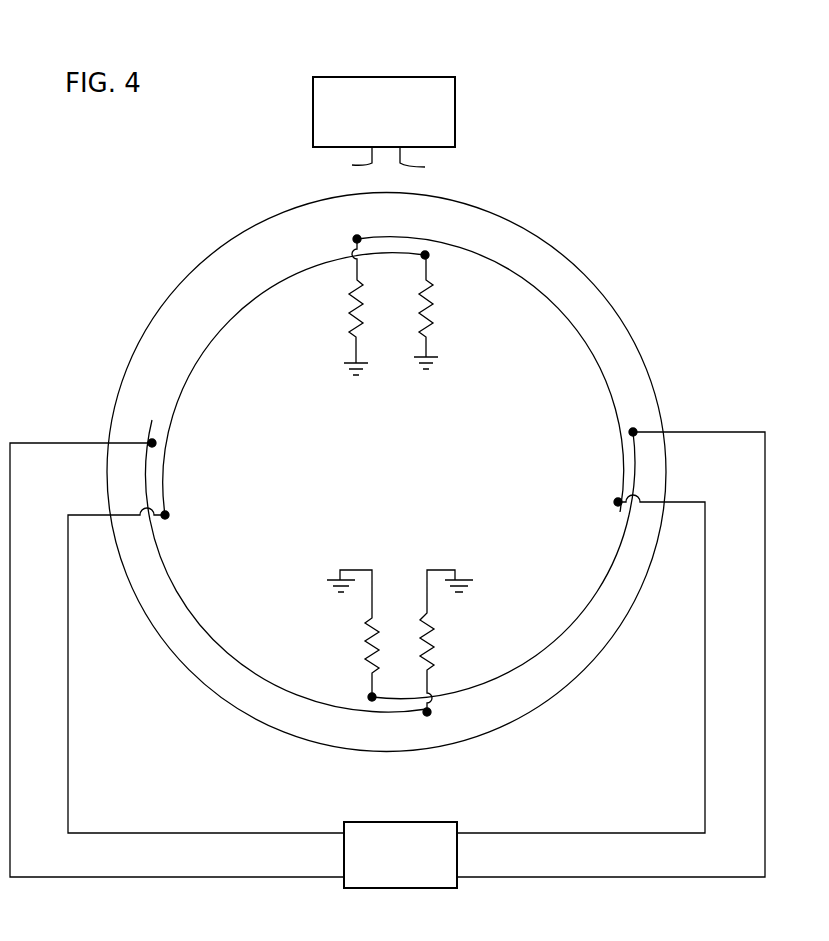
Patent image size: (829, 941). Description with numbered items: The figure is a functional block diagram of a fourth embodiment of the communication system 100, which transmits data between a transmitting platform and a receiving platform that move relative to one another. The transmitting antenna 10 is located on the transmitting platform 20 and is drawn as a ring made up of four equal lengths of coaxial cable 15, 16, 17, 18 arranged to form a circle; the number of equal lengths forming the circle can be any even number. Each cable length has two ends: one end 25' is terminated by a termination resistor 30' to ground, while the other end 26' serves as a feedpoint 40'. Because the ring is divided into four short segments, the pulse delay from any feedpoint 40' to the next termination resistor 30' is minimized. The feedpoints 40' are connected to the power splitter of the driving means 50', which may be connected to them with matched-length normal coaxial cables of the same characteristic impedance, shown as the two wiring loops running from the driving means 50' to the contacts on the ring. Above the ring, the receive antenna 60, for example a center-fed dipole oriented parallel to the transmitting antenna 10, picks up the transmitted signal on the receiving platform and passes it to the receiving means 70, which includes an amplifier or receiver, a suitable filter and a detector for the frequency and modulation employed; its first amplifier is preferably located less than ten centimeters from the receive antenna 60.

The transmitting antenna 10 is at (422, 460).
The equal length of coaxial cable 15 is at (600, 368).
The equal length of coaxial cable 16 is at (583, 613).
The equal length of coaxial cable 17 is at (234, 315).
The equal length of coaxial cable 18 is at (232, 655).
The transmitting platform 20 is at (151, 320).
The terminated end of coaxial cable 25' is at (399, 682).
The feedpoint end of coaxial cable 26' is at (390, 470).
The termination resistor 30' is at (399, 475).
The feedpoint 40' is at (428, 475).
The driving means 50' is at (387, 660).
The receive antenna 60 is at (416, 166).
The receiving means 70 is at (380, 77).
The communication system 100 is at (627, 226).